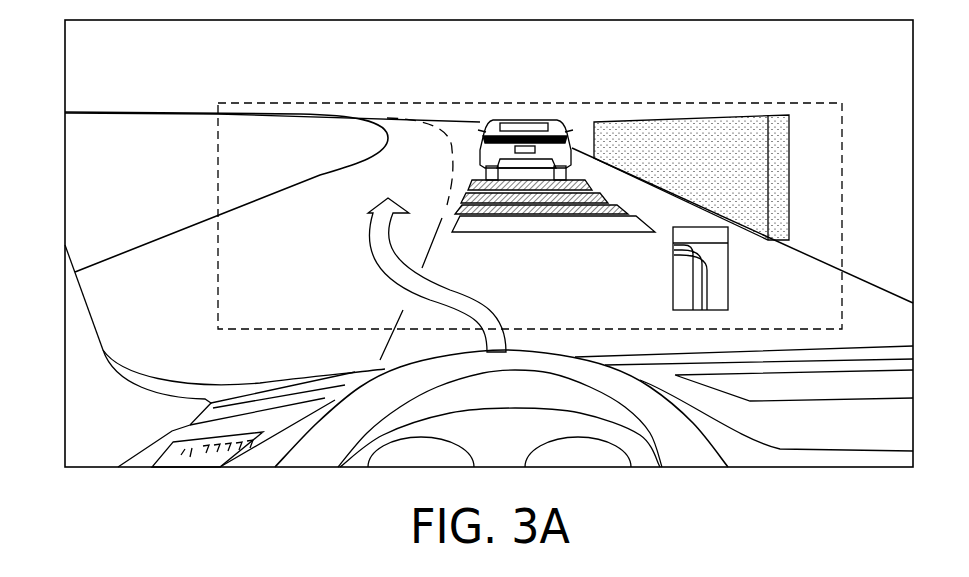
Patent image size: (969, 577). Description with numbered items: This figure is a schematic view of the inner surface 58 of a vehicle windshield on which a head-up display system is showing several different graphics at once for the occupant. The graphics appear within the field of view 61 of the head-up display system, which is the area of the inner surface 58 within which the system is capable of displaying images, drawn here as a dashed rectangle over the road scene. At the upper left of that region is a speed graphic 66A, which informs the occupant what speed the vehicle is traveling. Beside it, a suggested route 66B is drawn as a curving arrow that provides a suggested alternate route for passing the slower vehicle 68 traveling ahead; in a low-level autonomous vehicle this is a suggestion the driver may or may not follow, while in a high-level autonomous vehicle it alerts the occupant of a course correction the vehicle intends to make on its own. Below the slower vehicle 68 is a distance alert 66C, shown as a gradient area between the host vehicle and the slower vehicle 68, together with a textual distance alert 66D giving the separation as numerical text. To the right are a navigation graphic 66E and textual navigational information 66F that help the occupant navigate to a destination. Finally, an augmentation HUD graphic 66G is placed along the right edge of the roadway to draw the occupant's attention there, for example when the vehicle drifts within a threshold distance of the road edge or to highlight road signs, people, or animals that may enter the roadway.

The inner surface of the windshield 58 is at (110, 150).
The field of view 61 is at (418, 103).
The slower vehicle 68 is at (523, 120).
The speed graphic 66A is at (300, 272).
The suggested route 66B is at (385, 199).
The distance alert 66C is at (600, 200).
The textual distance alert 66D is at (517, 264).
The navigation graphic 66E is at (718, 268).
The textual navigational information 66F is at (653, 287).
The augmentation HUD graphic 66G is at (778, 125).